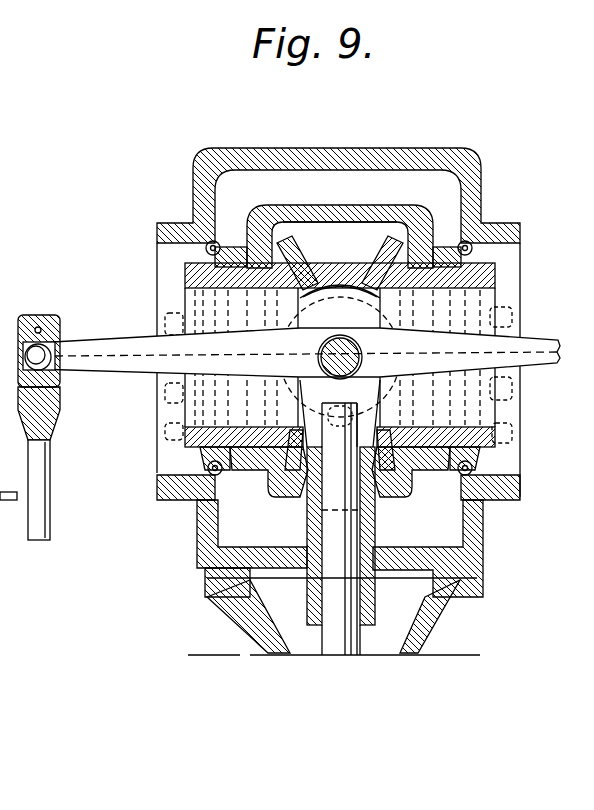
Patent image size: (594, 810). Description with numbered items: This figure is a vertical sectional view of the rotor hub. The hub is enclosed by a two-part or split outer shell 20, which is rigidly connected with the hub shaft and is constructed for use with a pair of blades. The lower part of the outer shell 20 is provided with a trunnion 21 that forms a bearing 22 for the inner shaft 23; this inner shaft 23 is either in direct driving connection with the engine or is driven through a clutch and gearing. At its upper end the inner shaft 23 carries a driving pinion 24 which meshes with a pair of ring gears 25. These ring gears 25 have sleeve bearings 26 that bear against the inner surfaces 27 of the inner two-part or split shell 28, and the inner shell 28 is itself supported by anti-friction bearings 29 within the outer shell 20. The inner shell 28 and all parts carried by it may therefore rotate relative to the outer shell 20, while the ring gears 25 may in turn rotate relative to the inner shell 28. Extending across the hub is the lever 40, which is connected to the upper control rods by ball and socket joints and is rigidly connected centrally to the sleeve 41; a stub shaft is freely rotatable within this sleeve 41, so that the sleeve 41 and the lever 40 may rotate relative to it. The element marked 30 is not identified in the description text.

The outer shell 20 is at (462, 155).
The trunnion 21 is at (365, 531).
The bearing 22 is at (323, 600).
The inner shaft 23 is at (362, 597).
The driving pinion 24 is at (386, 509).
The ring gears 25 is at (378, 262).
The sleeve bearings 26 is at (263, 296).
The inner surfaces 27 is at (262, 252).
The inner shell 28 is at (346, 210).
The anti-friction bearings 29 is at (215, 241).
The lever 30 is at (45, 464).
The lever 40 is at (112, 352).
The sleeve 41 is at (342, 340).